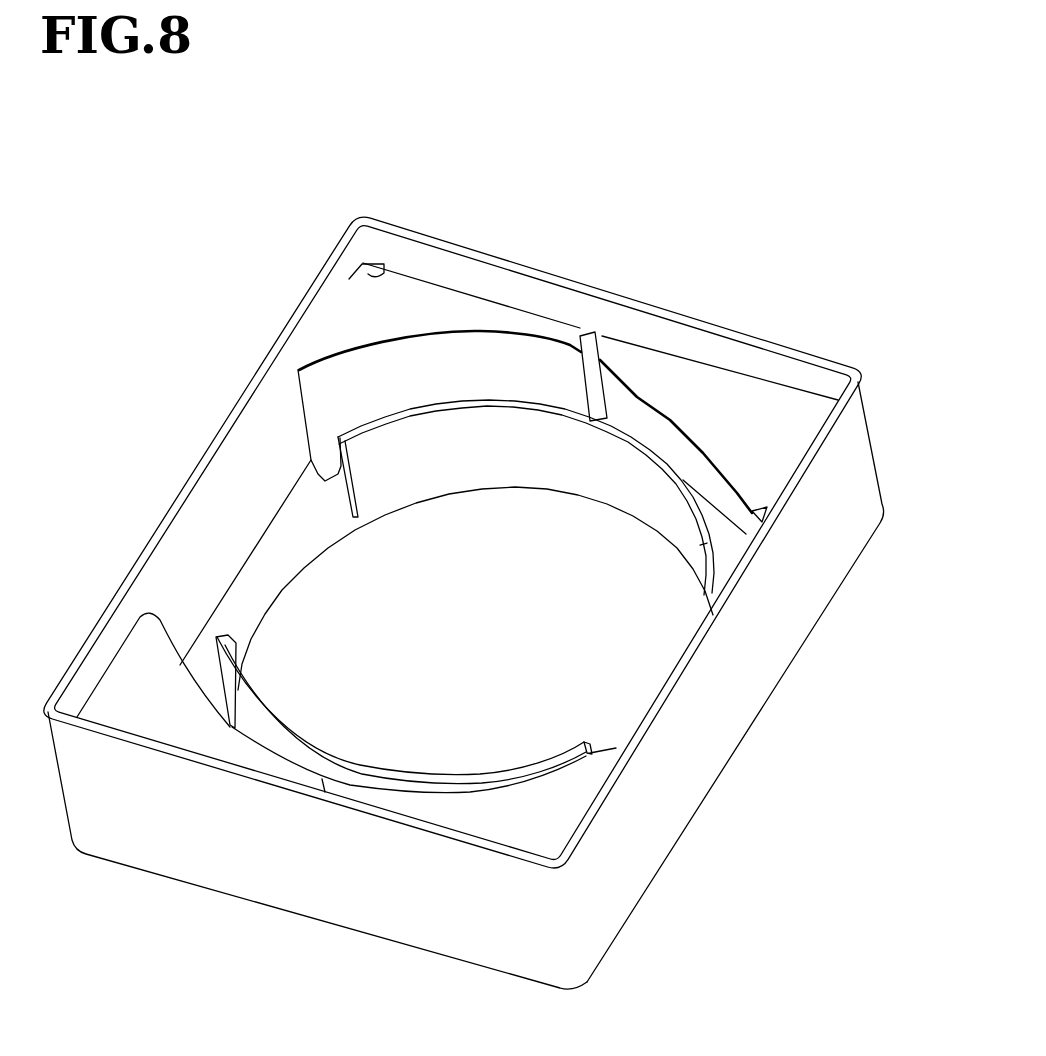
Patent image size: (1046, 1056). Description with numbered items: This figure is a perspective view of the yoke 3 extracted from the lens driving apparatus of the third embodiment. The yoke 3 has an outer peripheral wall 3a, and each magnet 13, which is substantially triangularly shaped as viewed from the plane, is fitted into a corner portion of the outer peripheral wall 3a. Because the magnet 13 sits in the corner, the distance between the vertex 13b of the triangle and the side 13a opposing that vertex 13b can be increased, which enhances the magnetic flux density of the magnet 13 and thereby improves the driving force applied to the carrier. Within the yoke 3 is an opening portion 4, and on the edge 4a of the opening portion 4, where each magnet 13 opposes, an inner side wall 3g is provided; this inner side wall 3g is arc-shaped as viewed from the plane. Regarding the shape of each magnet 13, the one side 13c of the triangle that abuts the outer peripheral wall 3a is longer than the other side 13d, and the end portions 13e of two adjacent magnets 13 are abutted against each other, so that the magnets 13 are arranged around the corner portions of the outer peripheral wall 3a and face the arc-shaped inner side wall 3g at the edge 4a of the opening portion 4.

The yoke 3 is at (793, 192).
The outer peripheral wall 3a is at (710, 737).
The inner side wall 3g is at (548, 478).
The opening portion 4 is at (612, 703).
The edge of the opening portion 4a is at (277, 595).
The magnet 13 is at (410, 305).
The side opposing the vertex 13a is at (493, 370).
The vertex 13b is at (383, 262).
The one side 13c is at (471, 295).
The other side 13d is at (300, 368).
The end portion 13e is at (592, 330).